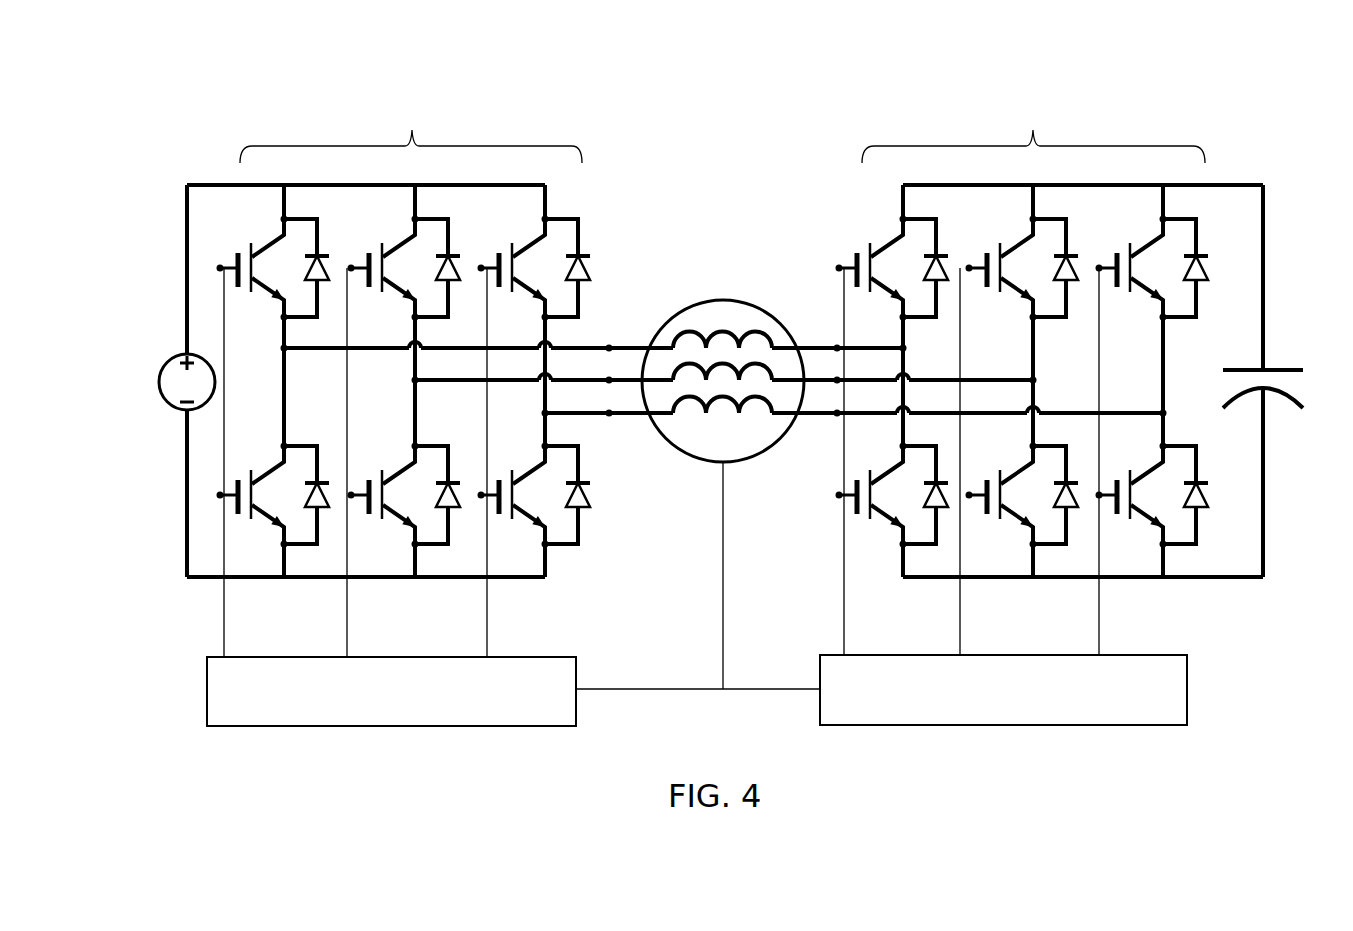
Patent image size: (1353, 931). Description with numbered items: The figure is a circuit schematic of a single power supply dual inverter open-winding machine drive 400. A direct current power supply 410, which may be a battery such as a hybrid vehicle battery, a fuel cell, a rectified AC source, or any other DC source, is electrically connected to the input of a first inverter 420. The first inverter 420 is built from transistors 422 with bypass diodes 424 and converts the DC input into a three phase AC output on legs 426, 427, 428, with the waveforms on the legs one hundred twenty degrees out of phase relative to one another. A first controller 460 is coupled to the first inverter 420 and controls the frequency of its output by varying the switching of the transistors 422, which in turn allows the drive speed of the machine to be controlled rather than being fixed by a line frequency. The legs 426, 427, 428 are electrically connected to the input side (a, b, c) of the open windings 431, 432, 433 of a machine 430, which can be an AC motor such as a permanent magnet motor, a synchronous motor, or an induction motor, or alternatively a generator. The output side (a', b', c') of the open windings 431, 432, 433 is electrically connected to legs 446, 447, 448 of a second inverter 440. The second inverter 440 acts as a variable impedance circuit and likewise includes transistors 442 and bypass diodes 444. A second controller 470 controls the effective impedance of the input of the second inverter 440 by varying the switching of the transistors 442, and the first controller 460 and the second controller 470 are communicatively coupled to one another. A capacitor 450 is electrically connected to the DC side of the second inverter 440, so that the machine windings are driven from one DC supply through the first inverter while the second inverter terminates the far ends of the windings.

The single power supply dual inverter open-winding machine drive 400 is at (222, 110).
The direct current power supply 410 is at (172, 392).
The first inverter 420 is at (412, 130).
The transistors 422 is at (522, 240).
The bypass diodes 424 is at (582, 252).
The leg 426 is at (550, 355).
The leg 427 is at (553, 352).
The leg 428 is at (556, 350).
The machine 430 is at (715, 297).
The open winding 431 is at (730, 330).
The open winding 432 is at (707, 380).
The open winding 433 is at (733, 410).
The second inverter 440 is at (1033, 130).
The transistors 442 is at (893, 245).
The bypass diodes 444 is at (935, 245).
The leg 446 is at (870, 343).
The leg 447 is at (943, 378).
The leg 448 is at (1063, 408).
The capacitor 450 is at (1277, 368).
The first controller 460 is at (391, 691).
The second controller 470 is at (1003, 690).